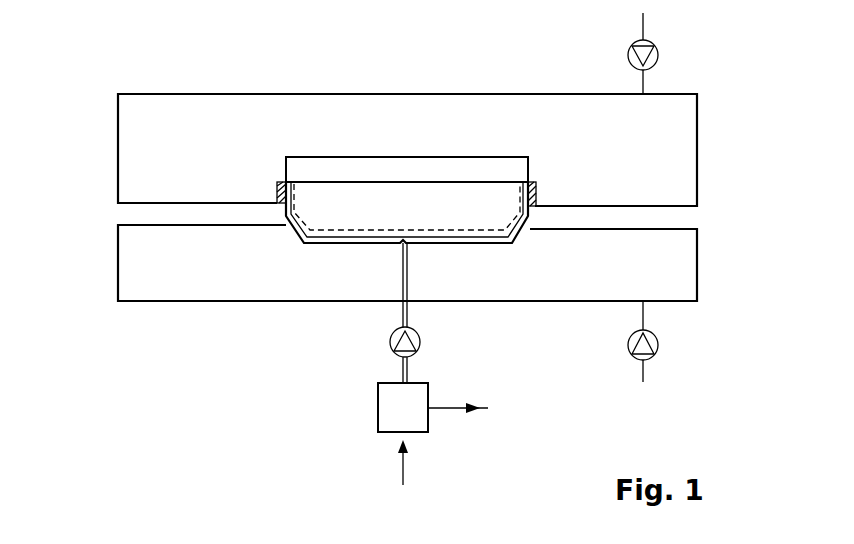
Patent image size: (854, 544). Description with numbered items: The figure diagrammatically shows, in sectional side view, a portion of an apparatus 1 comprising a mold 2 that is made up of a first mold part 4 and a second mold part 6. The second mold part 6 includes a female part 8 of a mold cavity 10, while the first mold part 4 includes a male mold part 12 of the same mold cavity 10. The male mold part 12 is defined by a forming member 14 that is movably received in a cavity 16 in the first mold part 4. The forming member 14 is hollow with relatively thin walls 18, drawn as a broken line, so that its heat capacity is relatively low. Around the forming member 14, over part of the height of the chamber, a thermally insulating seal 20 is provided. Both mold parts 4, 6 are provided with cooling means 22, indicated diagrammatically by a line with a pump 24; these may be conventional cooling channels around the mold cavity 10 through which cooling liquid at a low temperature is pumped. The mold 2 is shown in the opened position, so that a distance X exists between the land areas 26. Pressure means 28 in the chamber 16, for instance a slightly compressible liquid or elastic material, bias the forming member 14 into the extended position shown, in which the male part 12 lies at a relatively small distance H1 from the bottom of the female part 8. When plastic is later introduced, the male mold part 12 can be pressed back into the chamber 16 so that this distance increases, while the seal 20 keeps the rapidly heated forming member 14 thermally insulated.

The apparatus 1 is at (108, 75).
The mold 2 is at (108, 146).
The first mold part 4 is at (697, 130).
The second mold part 6 is at (697, 287).
The female part 8 is at (520, 241).
The mold cavity 10 is at (288, 244).
The male mold part 12 is at (535, 224).
The forming member 14 is at (402, 193).
The cavity 16 is at (317, 167).
The walls 18 is at (527, 186).
The thermally insulating seal 20 is at (277, 192).
The cooling means 22 is at (643, 82).
The pump 24 is at (658, 55).
The land areas 26 is at (135, 204).
The pressure means 28 is at (366, 178).
The distance H1 is at (325, 207).
The distance X is at (742, 180).